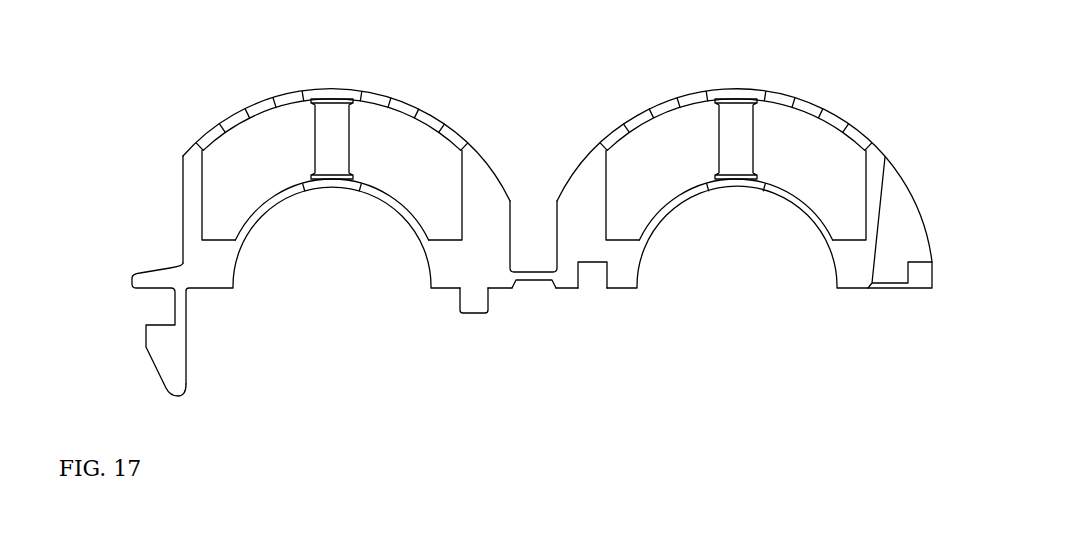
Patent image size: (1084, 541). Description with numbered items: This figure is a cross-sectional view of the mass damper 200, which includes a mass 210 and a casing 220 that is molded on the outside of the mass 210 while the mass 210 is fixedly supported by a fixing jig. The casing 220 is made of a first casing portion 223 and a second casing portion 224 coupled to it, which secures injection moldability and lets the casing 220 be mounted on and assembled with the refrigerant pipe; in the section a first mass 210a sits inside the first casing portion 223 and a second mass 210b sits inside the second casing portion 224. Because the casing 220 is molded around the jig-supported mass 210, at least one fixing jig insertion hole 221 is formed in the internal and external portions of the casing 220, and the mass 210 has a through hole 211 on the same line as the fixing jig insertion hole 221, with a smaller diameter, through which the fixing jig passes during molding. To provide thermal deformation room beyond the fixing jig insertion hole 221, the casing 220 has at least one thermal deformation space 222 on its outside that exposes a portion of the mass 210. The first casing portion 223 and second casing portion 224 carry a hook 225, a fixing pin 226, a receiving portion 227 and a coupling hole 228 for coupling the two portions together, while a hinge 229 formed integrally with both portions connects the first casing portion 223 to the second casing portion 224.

The mass damper 200 is at (173, 129).
The mass 210 is at (534, 129).
The first mass 210a is at (293, 118).
The second mass 210b is at (772, 120).
The through hole 211 is at (342, 138).
The casing 220 is at (483, 66).
The fixing jig insertion hole 221 is at (357, 90).
The thermal deformation space 222 is at (208, 124).
The first casing portion 223 is at (472, 148).
The second casing portion 224 is at (592, 143).
The hook 225 is at (182, 382).
The fixing pin 226 is at (473, 314).
The receiving portion 227 is at (893, 270).
The coupling hole 228 is at (606, 272).
The hinge 229 is at (533, 281).